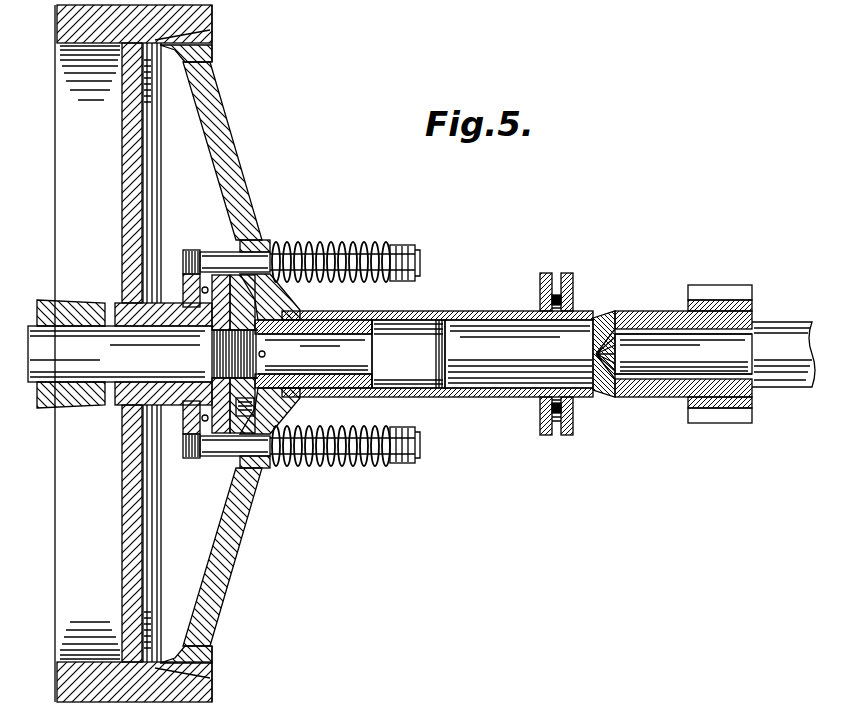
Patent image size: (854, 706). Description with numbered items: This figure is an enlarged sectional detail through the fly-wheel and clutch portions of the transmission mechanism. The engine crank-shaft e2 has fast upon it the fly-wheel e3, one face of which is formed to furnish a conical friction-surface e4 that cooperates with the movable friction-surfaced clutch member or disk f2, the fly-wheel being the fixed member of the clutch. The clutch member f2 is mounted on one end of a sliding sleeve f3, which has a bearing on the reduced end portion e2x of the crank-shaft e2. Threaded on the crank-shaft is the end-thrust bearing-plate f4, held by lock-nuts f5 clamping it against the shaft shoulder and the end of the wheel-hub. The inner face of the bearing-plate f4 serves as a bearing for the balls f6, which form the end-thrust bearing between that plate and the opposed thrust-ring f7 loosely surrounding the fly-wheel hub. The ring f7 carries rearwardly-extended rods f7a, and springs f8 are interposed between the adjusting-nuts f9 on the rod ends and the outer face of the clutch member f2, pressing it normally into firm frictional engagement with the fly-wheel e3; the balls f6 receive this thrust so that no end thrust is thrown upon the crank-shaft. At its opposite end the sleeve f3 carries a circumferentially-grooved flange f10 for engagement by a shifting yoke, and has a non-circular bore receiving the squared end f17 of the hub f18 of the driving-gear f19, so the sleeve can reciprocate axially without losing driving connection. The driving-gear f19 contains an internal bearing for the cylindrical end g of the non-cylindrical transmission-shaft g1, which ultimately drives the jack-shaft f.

The engine crank-shaft e2 is at (143, 354).
The reduced end portion of the crank-shaft e2x is at (350, 354).
The fly-wheel e3 is at (46, 693).
The conical friction-surface e4 is at (212, 15).
The jack-shaft f is at (192, 418).
The movable clutch member f2 is at (222, 147).
The sliding sleeve f3 is at (424, 318).
The end-thrust bearing-plate f4 is at (196, 448).
The lock-nuts f5 is at (262, 392).
The balls f6 is at (188, 262).
The thrust-ring f7 is at (195, 296).
The rearwardly-extended rods f7a is at (255, 245).
The springs f8 is at (337, 252).
The adjusting-nuts f9 is at (408, 252).
The circumferentially-grooved flange f10 is at (574, 285).
The non-cylindrical end of the gear-hub f17 is at (487, 330).
The hub of the driving-gear f18 is at (648, 311).
The driving-gear f19 is at (742, 294).
The cylindrical end of the transmission-shaft g is at (683, 354).
The transmission-shaft g1 is at (800, 296).